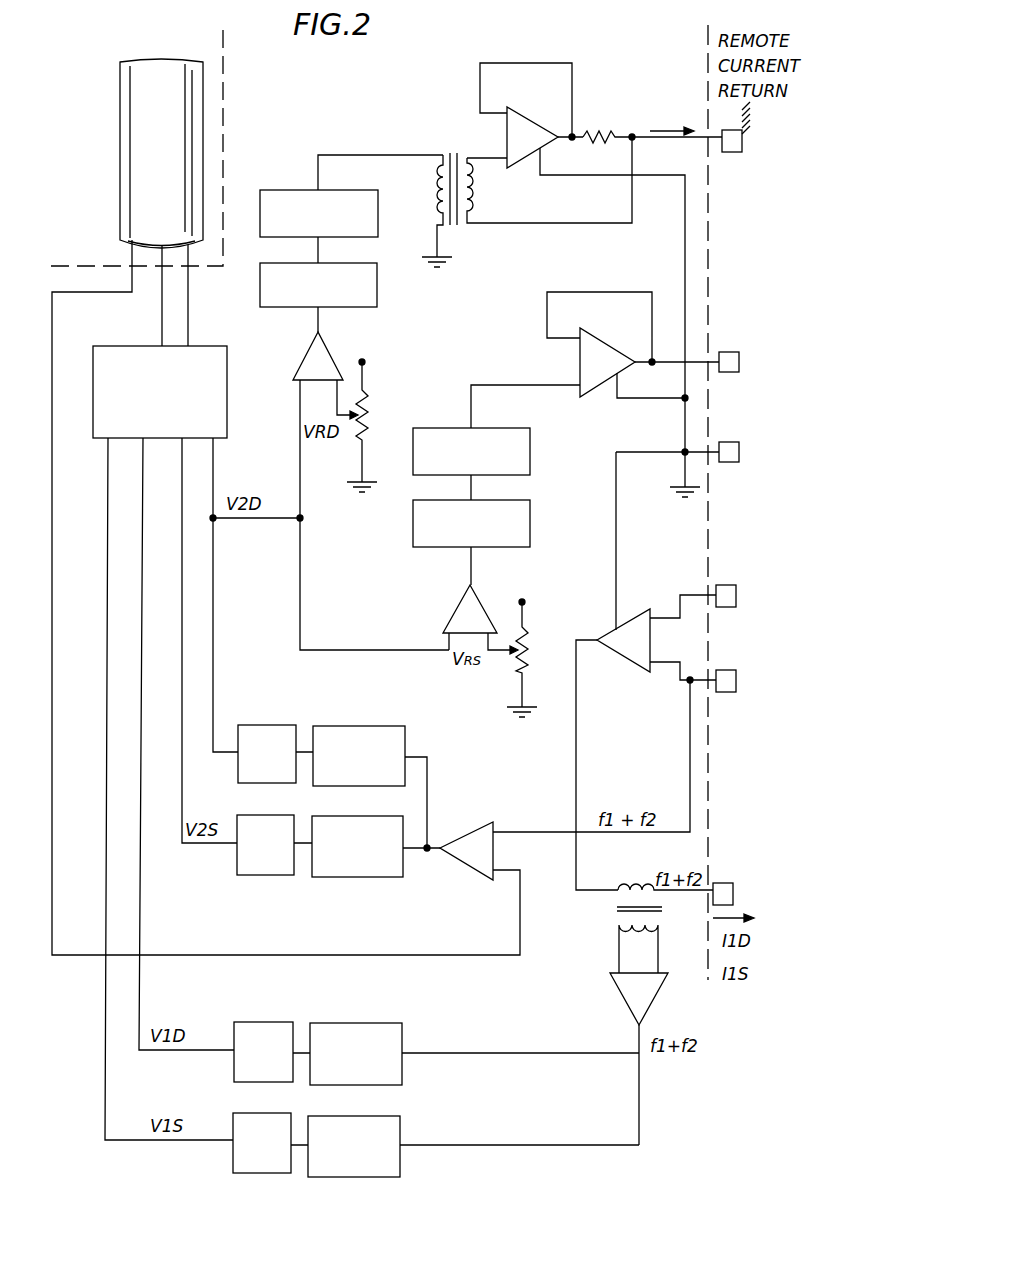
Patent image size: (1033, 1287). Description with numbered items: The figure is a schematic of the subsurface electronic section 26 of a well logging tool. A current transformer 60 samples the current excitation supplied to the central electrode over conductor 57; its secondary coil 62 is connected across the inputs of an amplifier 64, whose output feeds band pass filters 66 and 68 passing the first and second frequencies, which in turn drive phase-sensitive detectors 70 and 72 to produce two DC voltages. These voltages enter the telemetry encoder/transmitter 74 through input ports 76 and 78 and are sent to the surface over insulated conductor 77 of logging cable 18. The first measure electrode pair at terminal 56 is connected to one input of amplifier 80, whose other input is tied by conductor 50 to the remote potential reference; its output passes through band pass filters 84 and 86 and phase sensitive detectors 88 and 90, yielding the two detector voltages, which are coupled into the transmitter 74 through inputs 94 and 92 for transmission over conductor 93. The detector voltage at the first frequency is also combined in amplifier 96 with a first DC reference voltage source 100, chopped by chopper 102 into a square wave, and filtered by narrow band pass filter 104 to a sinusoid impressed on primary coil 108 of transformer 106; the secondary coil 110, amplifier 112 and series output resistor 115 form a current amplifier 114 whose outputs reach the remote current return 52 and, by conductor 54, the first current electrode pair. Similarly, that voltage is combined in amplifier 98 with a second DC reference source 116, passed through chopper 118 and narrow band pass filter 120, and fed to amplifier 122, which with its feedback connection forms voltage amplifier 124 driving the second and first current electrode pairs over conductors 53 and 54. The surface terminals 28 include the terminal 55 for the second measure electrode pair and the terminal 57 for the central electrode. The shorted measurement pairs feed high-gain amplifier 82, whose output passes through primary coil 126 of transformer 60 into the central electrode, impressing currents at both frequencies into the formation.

The logging cable 18 is at (126, 123).
The subsurface electronic section 26 is at (351, 204).
The surface terminals 28 is at (709, 580).
The conductor 50 is at (286, 597).
The conductor (remote current return) 52 is at (670, 140).
The conductor 53 is at (712, 353).
The conductor 54 is at (712, 443).
The terminal M2,M2' 55 is at (712, 583).
The terminal M1,M1' 56 is at (712, 670).
The conductor 57 is at (710, 884).
The current transformer 60 is at (630, 909).
The secondary winding of T2 62 is at (628, 930).
The amplifier 64 is at (614, 992).
The band pass filter 66 is at (376, 1023).
The band pass filter 68 is at (374, 1177).
The phase-sensitive detector 70 is at (276, 1022).
The phase-sensitive detector 72 is at (274, 1173).
The telemetry encoder/transmitter 74 is at (218, 346).
The input port 76 is at (141, 445).
The insulated conductor 77 is at (162, 312).
The input port 78 is at (102, 445).
The amplifier 80 is at (474, 822).
The high-gain amplifier 82 is at (636, 672).
The band pass filter 84 is at (365, 726).
The band pass filter 86 is at (384, 877).
The phase sensitive detector 88 is at (265, 725).
The phase sensitive detector 90 is at (282, 875).
The input 92 is at (180, 445).
The conductor 93 is at (188, 312).
The input 94 is at (212, 445).
The amplifier 96 is at (293, 382).
The amplifier 98 is at (455, 606).
The first DC reference voltage source 100 is at (380, 410).
The chopper 102 is at (377, 290).
The narrow band pass filter 104 is at (368, 237).
The transformer 106 is at (507, 184).
The primary coil 108 is at (432, 186).
The secondary coil 110 is at (474, 194).
The amplifier 112 is at (530, 107).
The current amplifier 114 is at (590, 268).
The series output resistor 115 is at (611, 144).
The second DC reference voltage source 116 is at (500, 672).
The chopper 118 is at (532, 525).
The narrow band pass filter 120 is at (532, 455).
The amplifier 122 is at (595, 395).
The voltage amplifier 124 is at (579, 333).
The primary coil 126 is at (632, 884).